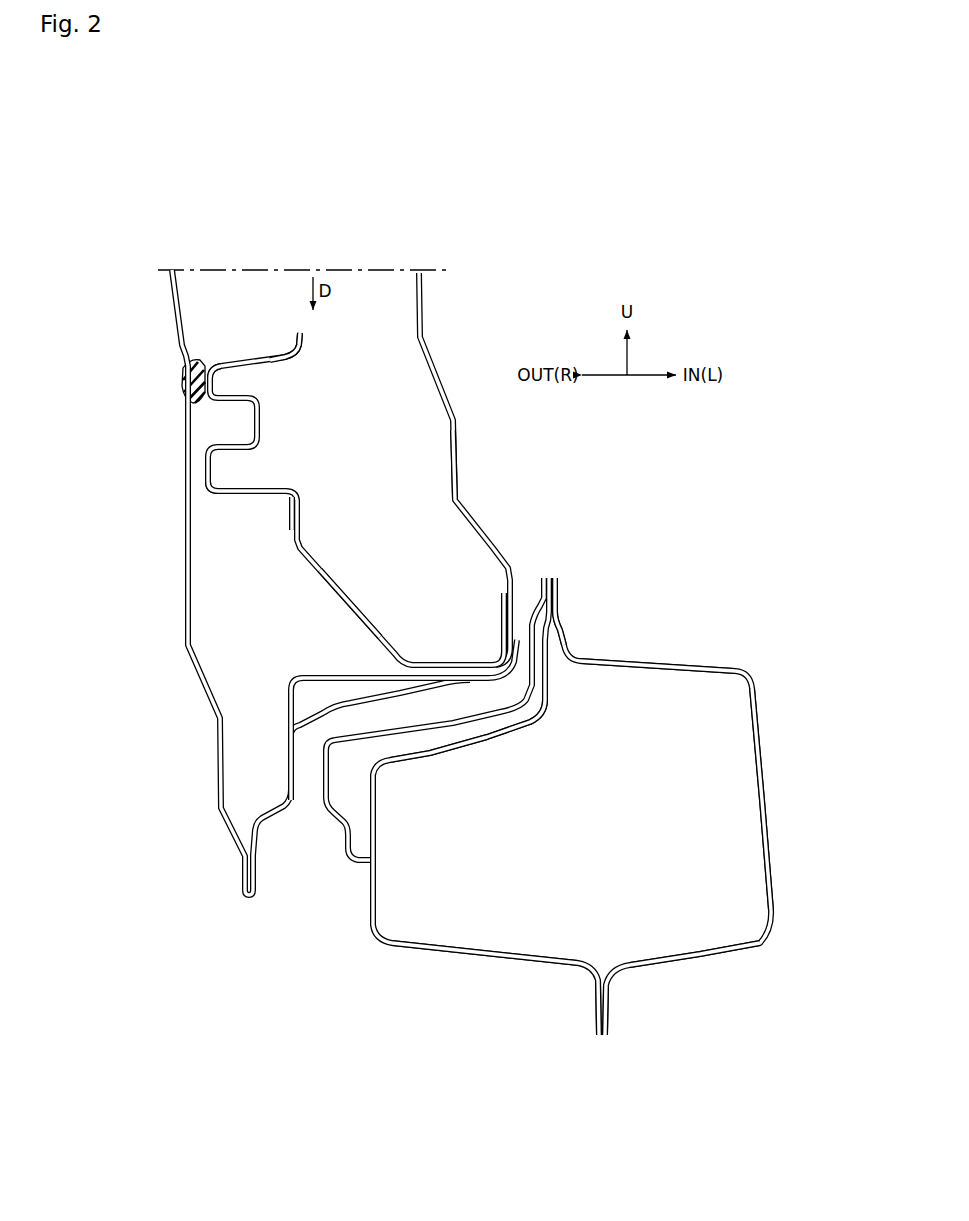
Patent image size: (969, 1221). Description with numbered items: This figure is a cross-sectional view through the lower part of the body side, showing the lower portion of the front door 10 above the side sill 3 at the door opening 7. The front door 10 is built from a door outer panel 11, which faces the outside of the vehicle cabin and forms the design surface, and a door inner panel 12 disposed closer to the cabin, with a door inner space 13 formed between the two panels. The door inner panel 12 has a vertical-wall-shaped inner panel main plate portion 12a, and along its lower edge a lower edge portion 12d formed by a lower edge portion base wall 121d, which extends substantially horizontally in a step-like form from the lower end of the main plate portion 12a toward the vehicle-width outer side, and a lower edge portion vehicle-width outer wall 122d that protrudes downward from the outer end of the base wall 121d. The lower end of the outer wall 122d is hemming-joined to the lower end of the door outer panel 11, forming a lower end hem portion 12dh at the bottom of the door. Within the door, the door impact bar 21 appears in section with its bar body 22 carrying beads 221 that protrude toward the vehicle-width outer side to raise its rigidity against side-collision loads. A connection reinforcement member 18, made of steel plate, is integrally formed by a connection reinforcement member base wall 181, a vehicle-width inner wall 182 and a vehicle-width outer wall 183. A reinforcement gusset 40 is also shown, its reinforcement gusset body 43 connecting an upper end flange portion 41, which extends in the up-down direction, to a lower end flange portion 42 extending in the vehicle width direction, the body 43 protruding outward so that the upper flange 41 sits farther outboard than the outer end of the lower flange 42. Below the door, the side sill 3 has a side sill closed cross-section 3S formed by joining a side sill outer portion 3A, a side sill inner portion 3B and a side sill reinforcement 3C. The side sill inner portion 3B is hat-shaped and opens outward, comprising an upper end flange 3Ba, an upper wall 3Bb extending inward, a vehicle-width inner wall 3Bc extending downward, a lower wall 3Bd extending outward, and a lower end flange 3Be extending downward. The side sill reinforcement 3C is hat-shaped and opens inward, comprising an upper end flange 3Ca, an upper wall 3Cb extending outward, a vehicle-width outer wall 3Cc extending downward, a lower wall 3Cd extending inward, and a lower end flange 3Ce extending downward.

The door opening 7 is at (627, 456).
The front door 10 is at (162, 310).
The door outer panel 11 is at (183, 580).
The door inner panel 12 is at (340, 599).
The inner panel main plate portion 12a is at (455, 462).
The lower edge portion 12d is at (269, 847).
The lower end hem portion 12dh is at (240, 880).
The lower edge portion base wall 121d is at (380, 694).
The lower edge portion vehicle-width outer wall 122d is at (290, 790).
The door inner space 13 is at (391, 431).
The connection reinforcement member 18 is at (377, 676).
The connection reinforcement member base wall 181 is at (478, 659).
The vehicle-width inner wall 182 is at (501, 596).
The vehicle-width outer wall 183 is at (288, 720).
The door impact bar 21 is at (303, 350).
The bar body 22 is at (274, 426).
The bead 221 is at (213, 362).
The reinforcement gusset 40 is at (372, 566).
The upper end flange portion 41 is at (302, 512).
The lower end flange portion 42 is at (443, 660).
The reinforcement gusset body 43 is at (367, 612).
The side sill 3 is at (549, 792).
The side sill outer portion 3A is at (345, 847).
The side sill inner portion 3B is at (668, 800).
The upper end flange 3Ba is at (560, 592).
The upper wall 3Bb is at (645, 662).
The vehicle-width inner wall 3Bc is at (762, 812).
The lower wall 3Bd is at (735, 952).
The lower end flange 3Be is at (608, 1010).
The side sill reinforcement 3C is at (486, 792).
The upper end flange 3Ca is at (543, 577).
The upper wall 3Cb is at (452, 757).
The vehicle-width outer wall 3Cc is at (378, 873).
The lower wall 3Cd is at (494, 955).
The lower end flange 3Ce is at (596, 1012).
The side sill closed cross-section 3S is at (598, 846).